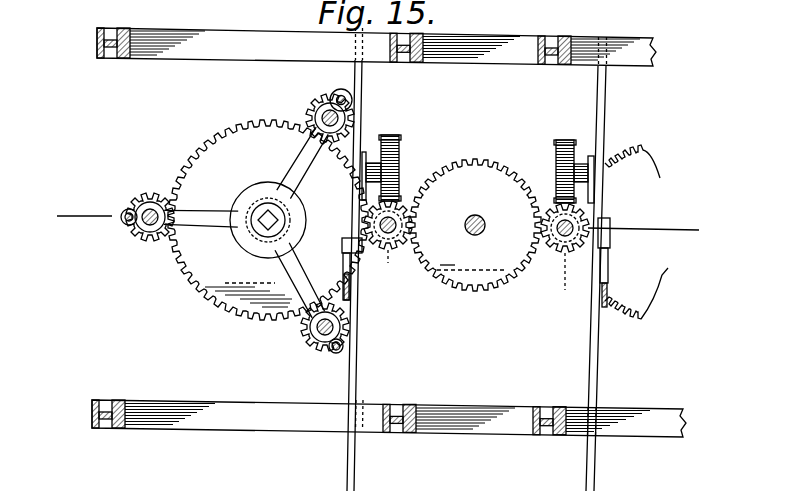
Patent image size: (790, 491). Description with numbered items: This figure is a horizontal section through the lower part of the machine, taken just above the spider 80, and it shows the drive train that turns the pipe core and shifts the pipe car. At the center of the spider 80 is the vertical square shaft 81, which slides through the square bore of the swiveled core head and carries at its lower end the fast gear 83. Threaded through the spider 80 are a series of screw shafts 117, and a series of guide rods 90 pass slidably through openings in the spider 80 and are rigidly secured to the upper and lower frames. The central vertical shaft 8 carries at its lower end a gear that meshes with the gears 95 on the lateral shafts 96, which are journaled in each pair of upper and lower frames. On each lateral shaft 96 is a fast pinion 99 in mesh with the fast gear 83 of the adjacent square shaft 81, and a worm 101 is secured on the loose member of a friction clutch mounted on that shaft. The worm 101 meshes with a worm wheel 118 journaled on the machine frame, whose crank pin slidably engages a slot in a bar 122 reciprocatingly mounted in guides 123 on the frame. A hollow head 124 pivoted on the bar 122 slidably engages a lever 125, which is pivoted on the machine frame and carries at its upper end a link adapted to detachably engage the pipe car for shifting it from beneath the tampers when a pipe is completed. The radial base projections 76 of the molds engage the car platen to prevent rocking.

The central vertical shaft 8 is at (478, 215).
The radial base projections 76 is at (378, 223).
The spider 80 is at (201, 213).
The vertical square shaft 81 is at (268, 190).
The fast gear 83 is at (205, 150).
The guide rods 90 is at (349, 102).
The gears 95 is at (415, 208).
The lateral shafts 96 is at (417, 232).
The fast pinion 99 is at (333, 99).
The worm 101 is at (417, 285).
The screw shafts 117 is at (313, 122).
The worm wheel 118 is at (396, 137).
The bar 122 is at (360, 360).
The guides 123 is at (347, 50).
The hollow head 124 is at (341, 248).
The lever 125 is at (362, 303).